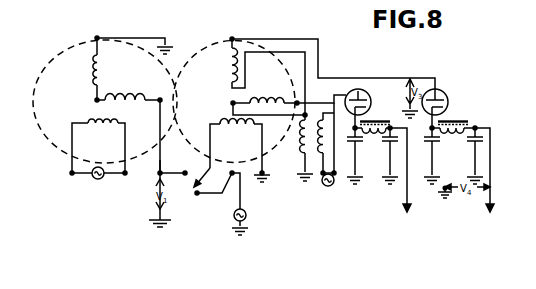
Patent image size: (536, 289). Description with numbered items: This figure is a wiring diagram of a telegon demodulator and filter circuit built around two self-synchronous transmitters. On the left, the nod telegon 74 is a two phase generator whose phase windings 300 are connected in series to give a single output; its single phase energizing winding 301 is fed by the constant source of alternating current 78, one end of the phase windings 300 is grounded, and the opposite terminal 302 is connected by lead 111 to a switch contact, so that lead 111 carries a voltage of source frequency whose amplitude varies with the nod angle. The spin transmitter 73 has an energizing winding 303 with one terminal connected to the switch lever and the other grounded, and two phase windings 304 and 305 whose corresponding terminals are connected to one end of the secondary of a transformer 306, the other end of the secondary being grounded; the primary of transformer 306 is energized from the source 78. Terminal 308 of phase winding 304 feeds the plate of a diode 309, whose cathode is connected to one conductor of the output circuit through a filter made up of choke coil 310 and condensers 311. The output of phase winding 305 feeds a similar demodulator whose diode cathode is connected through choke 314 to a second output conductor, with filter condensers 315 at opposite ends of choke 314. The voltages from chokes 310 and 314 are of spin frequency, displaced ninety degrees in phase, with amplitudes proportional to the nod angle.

The nod telegon 74 is at (66, 44).
The spin transmitter 73 is at (217, 44).
The source of alternating current 78 is at (98, 179).
The phase windings 300 is at (102, 86).
The primary winding 301 is at (84, 117).
The terminal 302 is at (158, 103).
The energizing winding 303 is at (227, 121).
The phase winding 304 is at (229, 77).
The phase winding 305 is at (288, 98).
The transformer 306 is at (341, 114).
The terminal 308 is at (233, 38).
The diode 309 is at (443, 94).
The choke coil 310 is at (463, 122).
The condensers 311 is at (466, 142).
The choke 314 is at (371, 121).
The filter condensers 315 is at (386, 140).
The lead 111 is at (162, 167).